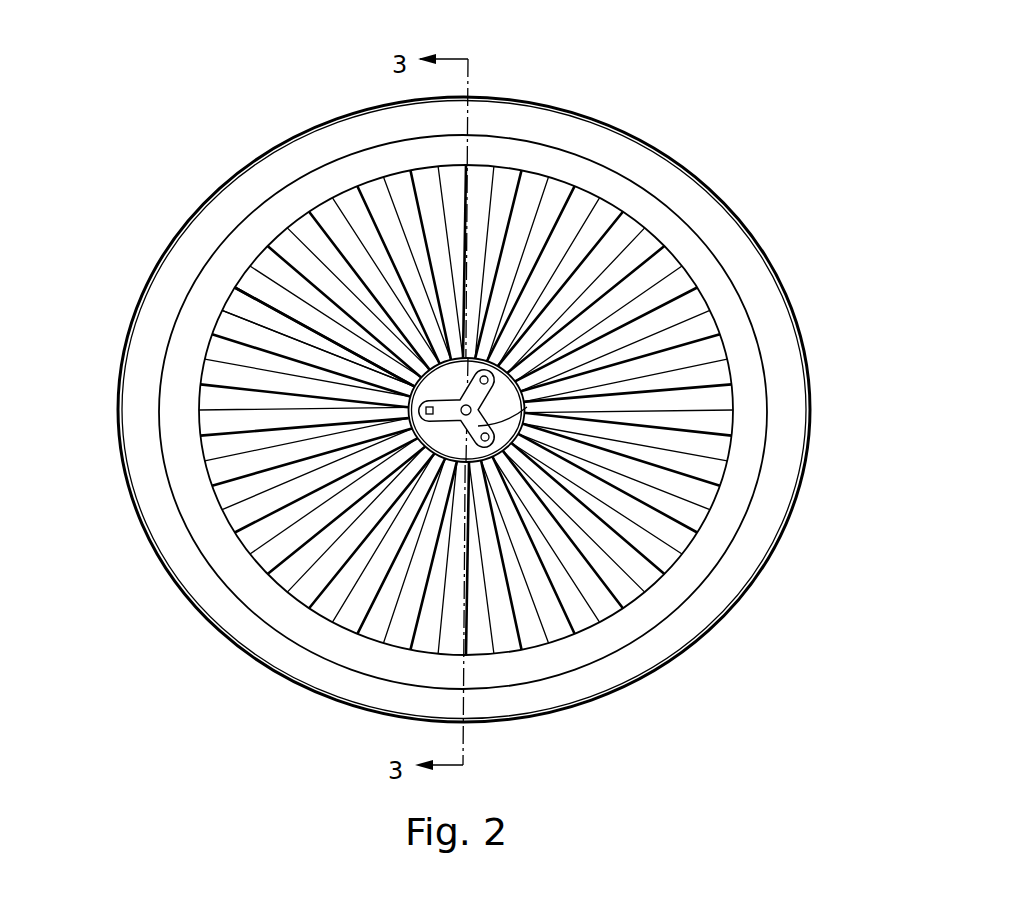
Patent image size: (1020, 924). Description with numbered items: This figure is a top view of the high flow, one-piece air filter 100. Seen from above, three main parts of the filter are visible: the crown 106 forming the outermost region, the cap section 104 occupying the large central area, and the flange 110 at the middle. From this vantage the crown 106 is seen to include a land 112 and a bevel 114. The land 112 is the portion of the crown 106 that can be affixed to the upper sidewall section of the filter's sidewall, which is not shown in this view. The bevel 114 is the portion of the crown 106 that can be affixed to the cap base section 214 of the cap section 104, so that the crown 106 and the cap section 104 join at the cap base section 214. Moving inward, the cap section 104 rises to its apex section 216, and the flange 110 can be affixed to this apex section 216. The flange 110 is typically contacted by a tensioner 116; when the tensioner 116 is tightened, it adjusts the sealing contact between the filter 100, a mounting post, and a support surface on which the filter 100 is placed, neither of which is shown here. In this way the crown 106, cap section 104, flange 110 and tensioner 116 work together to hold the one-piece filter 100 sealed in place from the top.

The filter 100 is at (690, 116).
The cap section 104 is at (297, 410).
The crown 106 is at (247, 167).
The flange 110 is at (627, 323).
The land 112 is at (728, 245).
The bevel 114 is at (702, 555).
The tensioner 116 is at (700, 389).
The cap base section 214 is at (263, 264).
The apex section 216 is at (390, 518).